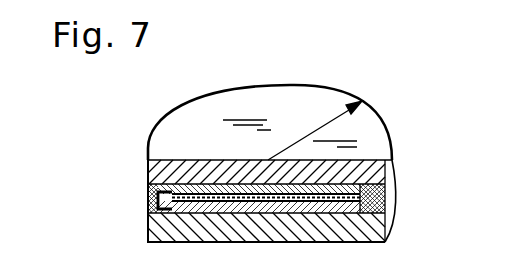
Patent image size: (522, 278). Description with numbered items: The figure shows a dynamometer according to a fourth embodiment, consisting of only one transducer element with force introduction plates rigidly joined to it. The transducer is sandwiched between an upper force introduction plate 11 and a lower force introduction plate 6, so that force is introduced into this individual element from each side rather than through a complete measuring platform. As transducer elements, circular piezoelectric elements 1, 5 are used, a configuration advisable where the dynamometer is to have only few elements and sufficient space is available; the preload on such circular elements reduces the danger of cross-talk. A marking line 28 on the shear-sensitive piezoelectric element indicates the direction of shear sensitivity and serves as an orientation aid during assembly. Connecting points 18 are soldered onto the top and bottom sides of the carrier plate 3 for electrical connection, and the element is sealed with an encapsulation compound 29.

The circular piezoelectric element 1 is at (355, 188).
The sensor layer 3 is at (362, 200).
The circular piezoelectric element 5 is at (381, 213).
The lower force introduction plate 6 is at (350, 231).
The upper force introduction plate 11 is at (368, 125).
The connecting points 18 is at (122, 208).
The marking line 28 is at (318, 127).
The encapsulation compound 29 is at (157, 212).